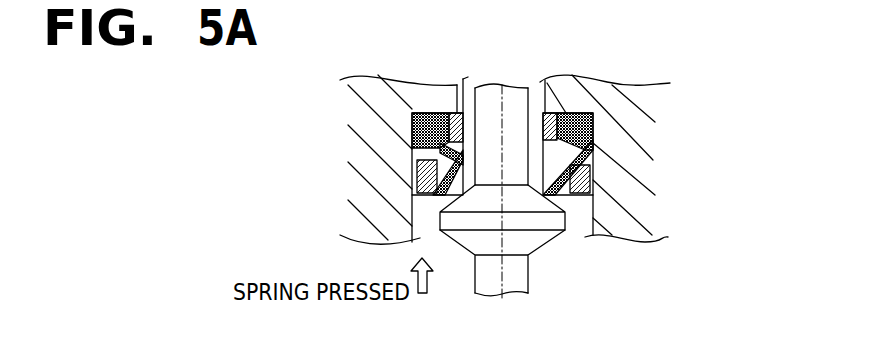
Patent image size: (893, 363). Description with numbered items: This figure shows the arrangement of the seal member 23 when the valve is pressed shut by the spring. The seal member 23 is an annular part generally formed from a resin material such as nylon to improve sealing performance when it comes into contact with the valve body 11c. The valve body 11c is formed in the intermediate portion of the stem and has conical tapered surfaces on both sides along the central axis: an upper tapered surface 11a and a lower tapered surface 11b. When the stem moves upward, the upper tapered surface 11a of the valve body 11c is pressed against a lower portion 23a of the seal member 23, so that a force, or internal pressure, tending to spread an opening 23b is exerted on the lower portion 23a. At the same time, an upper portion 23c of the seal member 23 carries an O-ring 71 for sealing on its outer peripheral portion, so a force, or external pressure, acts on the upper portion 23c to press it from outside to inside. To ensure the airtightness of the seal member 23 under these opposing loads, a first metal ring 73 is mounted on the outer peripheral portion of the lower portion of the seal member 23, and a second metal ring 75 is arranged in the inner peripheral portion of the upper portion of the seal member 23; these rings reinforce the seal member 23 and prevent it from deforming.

The second metal ring 75 is at (531, 117).
The O-ring 71 is at (440, 122).
The seal member 23 is at (440, 150).
The lower portion 23a is at (440, 180).
The opening 23b is at (536, 148).
The upper portion 23c is at (565, 108).
The first metal ring 73 is at (578, 182).
The upper tapered surface 11a is at (593, 203).
The lower tapered surface 11b is at (549, 246).
The valve body 11c is at (565, 220).